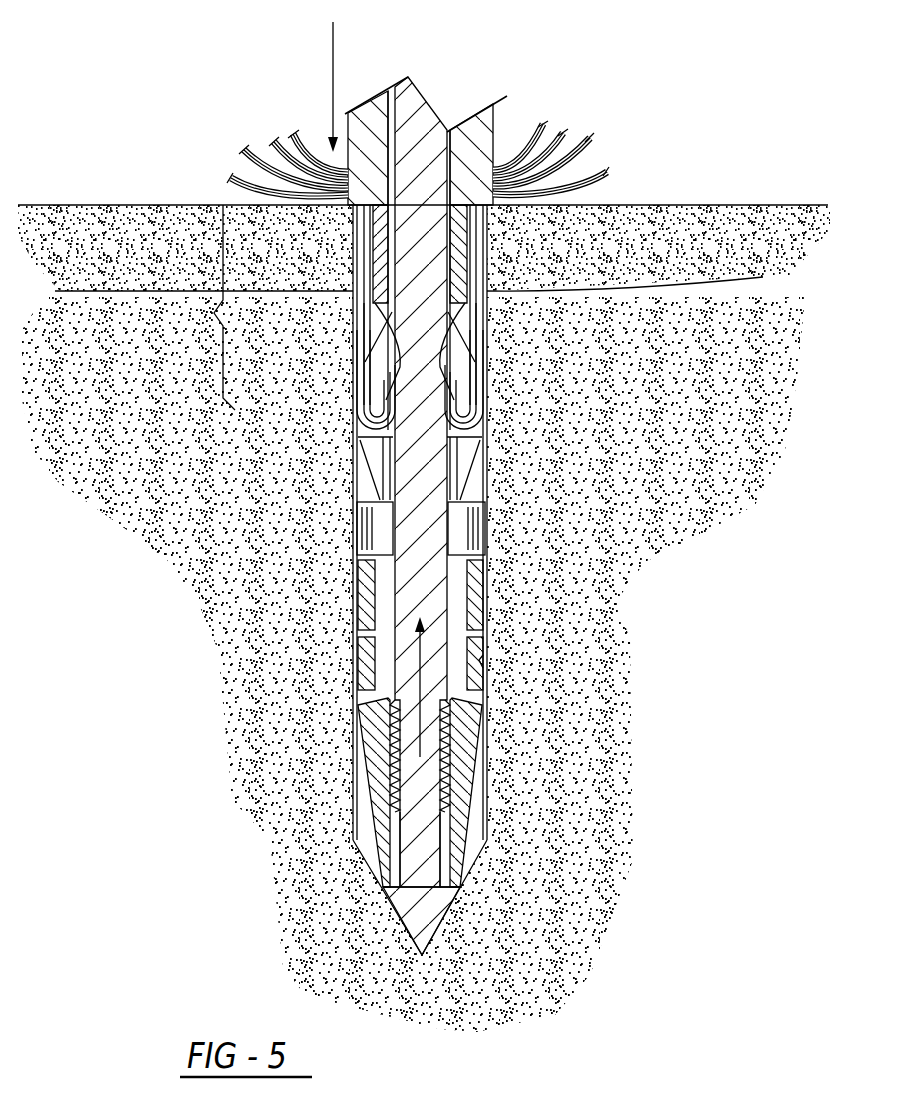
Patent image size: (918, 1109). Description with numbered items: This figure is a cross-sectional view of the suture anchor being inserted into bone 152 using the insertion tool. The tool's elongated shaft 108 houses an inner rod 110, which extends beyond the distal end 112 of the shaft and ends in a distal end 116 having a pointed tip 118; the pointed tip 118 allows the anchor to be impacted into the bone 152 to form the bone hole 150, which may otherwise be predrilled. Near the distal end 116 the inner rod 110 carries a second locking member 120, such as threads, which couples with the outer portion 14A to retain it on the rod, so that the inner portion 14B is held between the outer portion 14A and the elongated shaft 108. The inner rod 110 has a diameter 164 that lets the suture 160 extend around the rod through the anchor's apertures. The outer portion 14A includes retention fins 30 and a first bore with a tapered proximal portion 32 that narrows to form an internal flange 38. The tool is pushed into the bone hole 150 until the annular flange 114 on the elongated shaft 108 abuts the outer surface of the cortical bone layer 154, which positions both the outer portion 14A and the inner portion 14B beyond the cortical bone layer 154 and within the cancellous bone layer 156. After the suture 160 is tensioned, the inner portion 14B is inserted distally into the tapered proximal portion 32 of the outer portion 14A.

The inner rod 110 is at (421, 123).
The elongated shaft 108 is at (492, 125).
The suture 160 is at (597, 156).
The bone 152 is at (667, 224).
The cortical bone layer 154 is at (730, 238).
The inner portion 14B is at (487, 325).
The annular flange 114 is at (350, 216).
The distal end 112 is at (385, 305).
The diameter 164 is at (400, 368).
The bone hole 150 is at (673, 912).
The retention fins 30 is at (355, 580).
The tapered proximal portion 32 is at (487, 663).
The internal flange 38 is at (390, 692).
The second locking member 120 is at (398, 795).
The cancellous bone layer 156 is at (562, 760).
The outer portion 14A is at (470, 752).
The distal end 116 is at (405, 893).
The pointed tip 118 is at (430, 947).